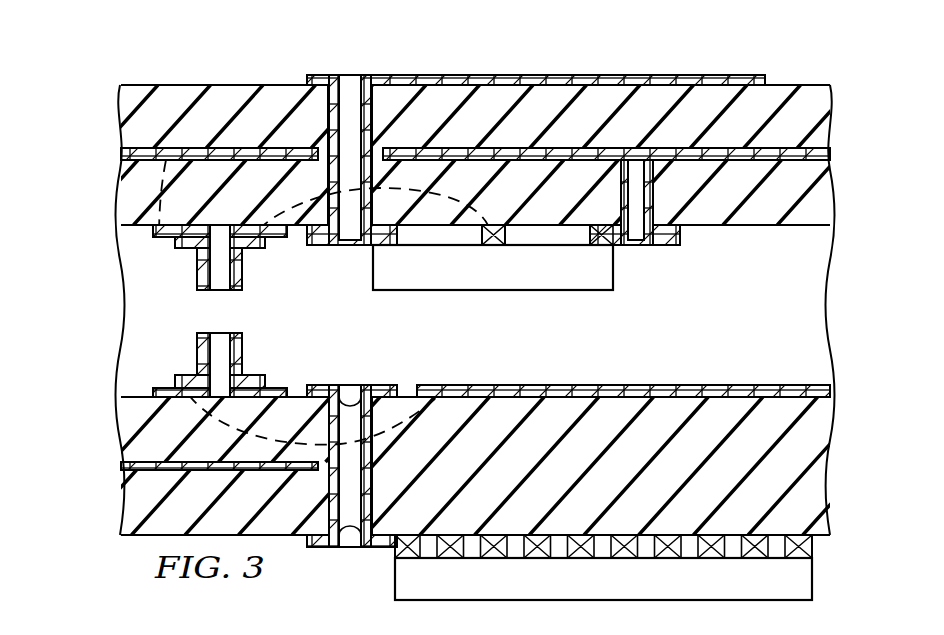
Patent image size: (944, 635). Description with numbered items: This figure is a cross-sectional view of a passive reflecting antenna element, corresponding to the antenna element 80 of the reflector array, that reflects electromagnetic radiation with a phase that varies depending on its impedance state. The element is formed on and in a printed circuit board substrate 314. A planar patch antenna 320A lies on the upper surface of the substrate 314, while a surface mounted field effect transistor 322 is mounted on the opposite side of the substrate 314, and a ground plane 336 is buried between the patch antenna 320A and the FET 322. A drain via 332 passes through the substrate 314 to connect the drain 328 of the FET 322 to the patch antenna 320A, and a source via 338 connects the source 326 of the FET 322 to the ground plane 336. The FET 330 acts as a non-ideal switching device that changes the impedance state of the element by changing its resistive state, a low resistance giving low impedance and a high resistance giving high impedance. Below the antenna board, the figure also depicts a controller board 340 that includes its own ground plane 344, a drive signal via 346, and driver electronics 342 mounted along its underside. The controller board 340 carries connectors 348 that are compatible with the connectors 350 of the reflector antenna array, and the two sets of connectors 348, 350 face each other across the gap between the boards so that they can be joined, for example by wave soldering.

The antenna element 80 is at (95, 416).
The printed circuit board substrate 314 is at (121, 100).
The patch antenna 320A is at (325, 78).
The surface mounted field effect transistor 322 is at (372, 274).
The source 326 is at (620, 240).
The drain 328 is at (372, 246).
The FET 330 is at (507, 242).
The drain via 332 is at (330, 98).
The ground plane 336 is at (121, 153).
The source via 338 is at (618, 188).
The controller board 340 is at (707, 378).
The driver electronics 342 is at (813, 578).
The ground plane 344 is at (833, 392).
The drive signal via 346 is at (352, 386).
The connectors 348 is at (197, 360).
The connectors 350 is at (197, 270).